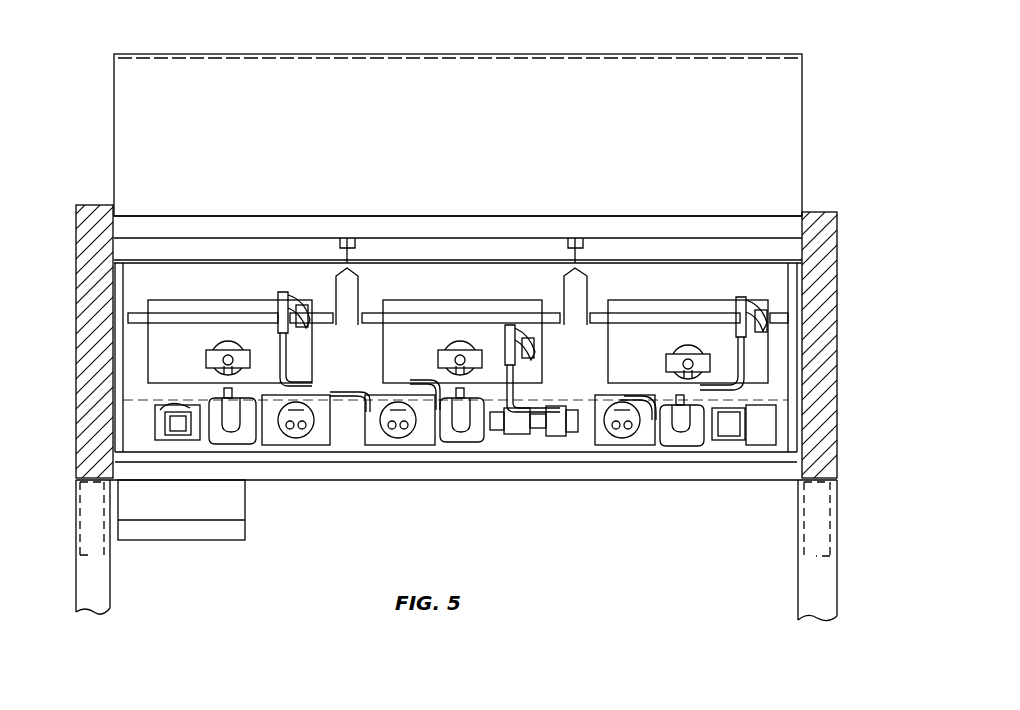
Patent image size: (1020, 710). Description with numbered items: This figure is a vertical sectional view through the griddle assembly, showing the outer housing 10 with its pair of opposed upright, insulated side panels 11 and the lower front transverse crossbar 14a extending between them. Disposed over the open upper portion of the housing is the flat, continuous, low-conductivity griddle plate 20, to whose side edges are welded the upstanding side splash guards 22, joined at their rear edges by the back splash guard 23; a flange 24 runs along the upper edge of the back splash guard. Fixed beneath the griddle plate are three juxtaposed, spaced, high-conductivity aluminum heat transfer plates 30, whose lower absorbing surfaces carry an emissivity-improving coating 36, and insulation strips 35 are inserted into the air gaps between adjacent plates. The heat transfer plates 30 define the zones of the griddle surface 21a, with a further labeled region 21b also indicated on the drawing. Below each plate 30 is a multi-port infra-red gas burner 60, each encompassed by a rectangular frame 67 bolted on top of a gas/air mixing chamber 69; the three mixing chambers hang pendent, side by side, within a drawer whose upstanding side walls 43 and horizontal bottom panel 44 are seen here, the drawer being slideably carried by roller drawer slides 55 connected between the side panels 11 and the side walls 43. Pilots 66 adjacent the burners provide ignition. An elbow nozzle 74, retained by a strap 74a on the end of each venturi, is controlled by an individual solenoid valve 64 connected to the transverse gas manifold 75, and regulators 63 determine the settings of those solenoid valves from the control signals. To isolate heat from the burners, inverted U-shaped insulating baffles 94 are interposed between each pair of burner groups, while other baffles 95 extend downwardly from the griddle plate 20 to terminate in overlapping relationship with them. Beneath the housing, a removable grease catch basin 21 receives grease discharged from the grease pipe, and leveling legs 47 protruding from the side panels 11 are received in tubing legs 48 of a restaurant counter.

The outer housing 10 is at (68, 214).
The side panels 11 is at (76, 232).
The lower front transverse crossbar 14a is at (442, 480).
The griddle plate 20 is at (435, 222).
The grease catch basin 21 is at (250, 522).
The handle 21a is at (172, 220).
The right top section 21b is at (690, 222).
The side splash guards 22 is at (113, 125).
The back splash guard 23 is at (478, 98).
The flange 24 is at (402, 53).
The heat transfer plates 30 is at (230, 230).
The insulation strips 35 is at (345, 236).
The coating 36 is at (282, 260).
The side walls 43 is at (124, 305).
The bottom panel 44 is at (566, 462).
The leveling legs 47 is at (80, 504).
The tubing legs 48 is at (86, 590).
The roller drawer slides 55 is at (124, 378).
The infra-red gas burners 60 is at (202, 305).
The regulators 63 is at (296, 440).
The solenoid valves 64 is at (190, 430).
The pilots 66 is at (292, 320).
The frame 67 is at (222, 323).
The gas/air mixing chamber 69 is at (196, 360).
The elbow nozzle 74 is at (216, 358).
The strap 74a is at (236, 362).
The gas manifold 75 is at (345, 430).
The insulating baffles 94 is at (458, 314).
The baffles 95 is at (356, 240).